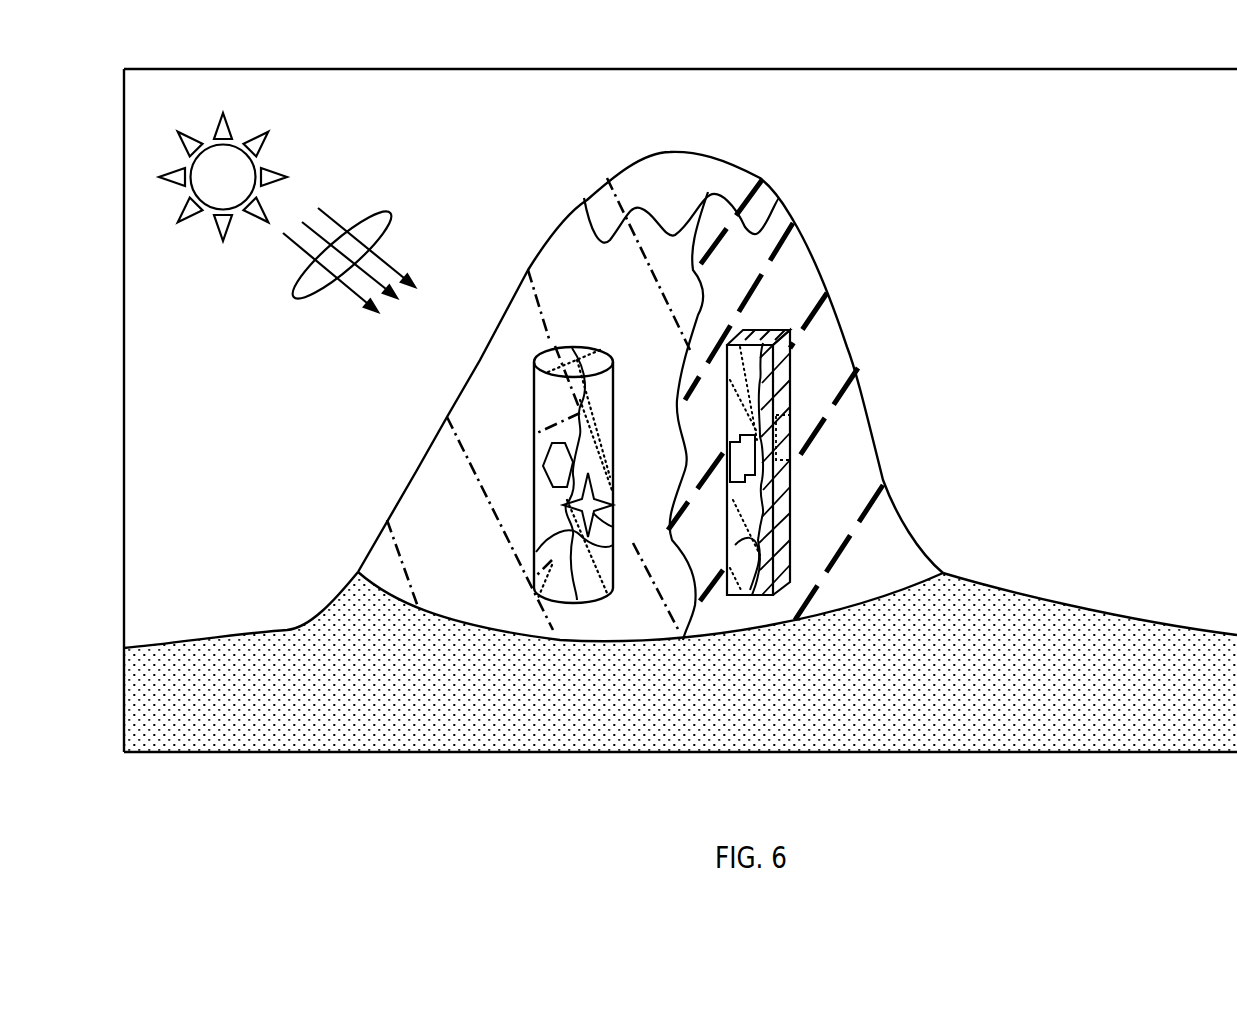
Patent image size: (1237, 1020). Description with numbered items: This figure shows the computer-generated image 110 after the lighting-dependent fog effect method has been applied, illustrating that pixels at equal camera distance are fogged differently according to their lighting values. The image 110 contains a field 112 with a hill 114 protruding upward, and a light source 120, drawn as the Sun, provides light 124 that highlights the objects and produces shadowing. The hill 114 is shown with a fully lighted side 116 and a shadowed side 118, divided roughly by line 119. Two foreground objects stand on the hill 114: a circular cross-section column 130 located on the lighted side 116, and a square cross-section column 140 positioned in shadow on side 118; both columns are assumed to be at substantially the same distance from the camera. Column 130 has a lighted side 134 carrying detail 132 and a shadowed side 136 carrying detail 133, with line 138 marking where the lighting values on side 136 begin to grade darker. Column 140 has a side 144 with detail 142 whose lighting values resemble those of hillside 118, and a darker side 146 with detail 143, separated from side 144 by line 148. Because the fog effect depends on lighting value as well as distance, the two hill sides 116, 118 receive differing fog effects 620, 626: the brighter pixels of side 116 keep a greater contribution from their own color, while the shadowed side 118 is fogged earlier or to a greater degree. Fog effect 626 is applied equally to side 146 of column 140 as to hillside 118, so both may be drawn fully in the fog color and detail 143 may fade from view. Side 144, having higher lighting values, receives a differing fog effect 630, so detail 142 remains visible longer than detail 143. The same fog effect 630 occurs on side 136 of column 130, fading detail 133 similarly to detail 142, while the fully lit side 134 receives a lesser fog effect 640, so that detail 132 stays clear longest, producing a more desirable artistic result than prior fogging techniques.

The computer-generated image 110 is at (1040, 69).
The field 112 is at (1005, 589).
The hill 114 is at (380, 533).
The lighted side 116 is at (587, 238).
The shadowed side 118 is at (803, 287).
The dividing line 119 is at (708, 192).
The light source 120 is at (263, 140).
The light 124 is at (293, 297).
The circular cross-section column 130 is at (564, 466).
The detail 132 is at (545, 453).
The detail 133 is at (607, 503).
The lighted side 134 is at (553, 357).
The shadowed side 136 is at (600, 352).
The line 138 is at (538, 549).
The square cross-section column 140 is at (769, 464).
The detail 142 is at (732, 440).
The detail 143 is at (782, 428).
The side 144 is at (747, 340).
The side 146 is at (783, 518).
The line 148 is at (750, 538).
The fog effect 620 is at (462, 462).
The fog effect 626 is at (797, 462).
The fog effect 630 is at (737, 593).
The fog effect 640 is at (565, 560).